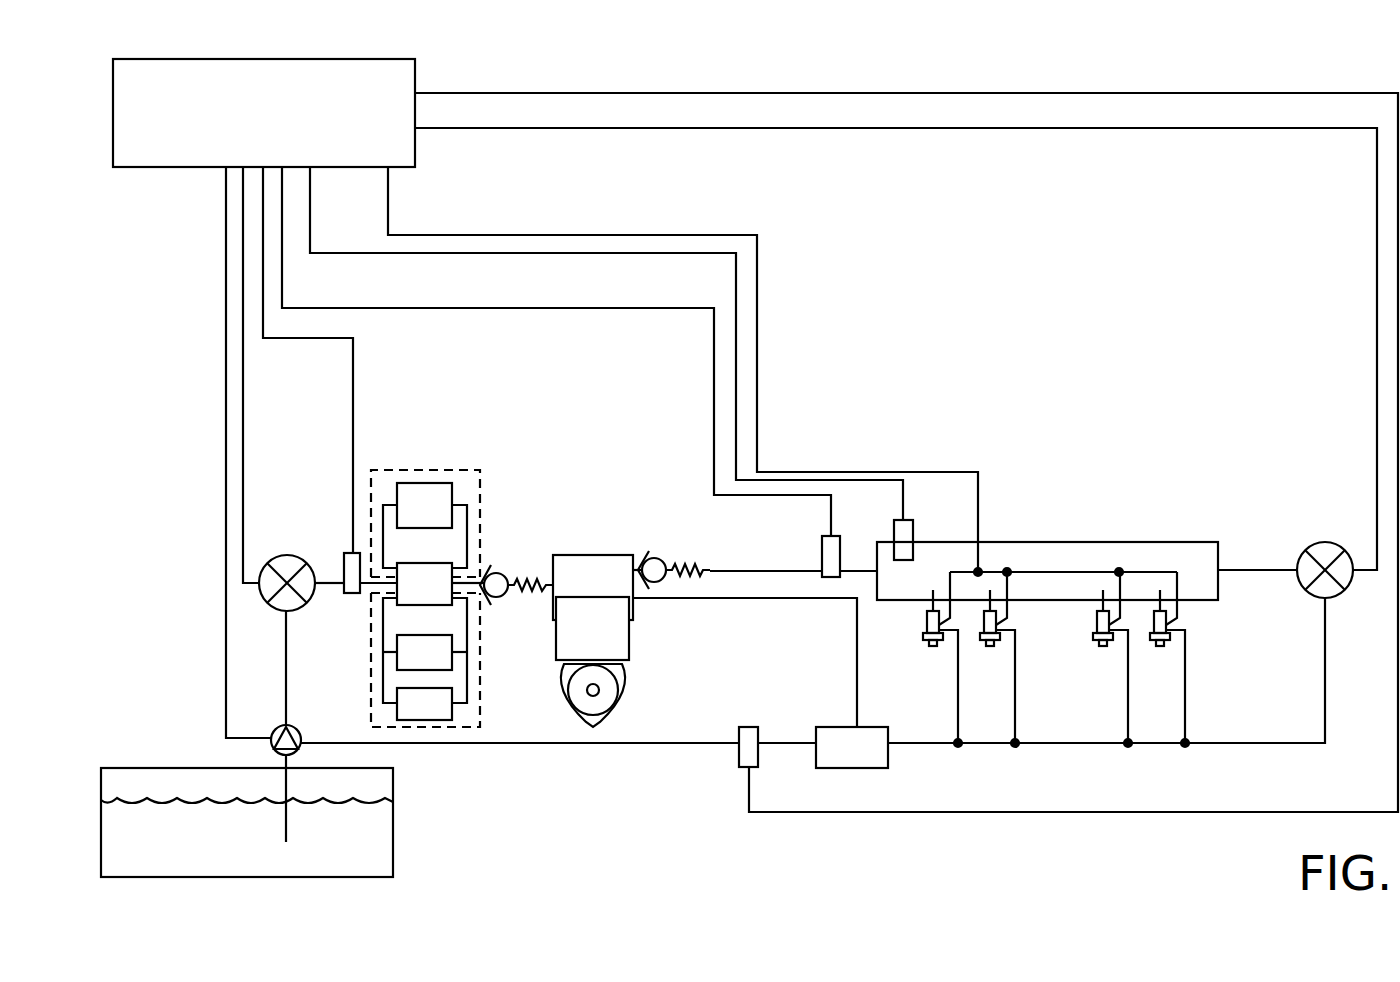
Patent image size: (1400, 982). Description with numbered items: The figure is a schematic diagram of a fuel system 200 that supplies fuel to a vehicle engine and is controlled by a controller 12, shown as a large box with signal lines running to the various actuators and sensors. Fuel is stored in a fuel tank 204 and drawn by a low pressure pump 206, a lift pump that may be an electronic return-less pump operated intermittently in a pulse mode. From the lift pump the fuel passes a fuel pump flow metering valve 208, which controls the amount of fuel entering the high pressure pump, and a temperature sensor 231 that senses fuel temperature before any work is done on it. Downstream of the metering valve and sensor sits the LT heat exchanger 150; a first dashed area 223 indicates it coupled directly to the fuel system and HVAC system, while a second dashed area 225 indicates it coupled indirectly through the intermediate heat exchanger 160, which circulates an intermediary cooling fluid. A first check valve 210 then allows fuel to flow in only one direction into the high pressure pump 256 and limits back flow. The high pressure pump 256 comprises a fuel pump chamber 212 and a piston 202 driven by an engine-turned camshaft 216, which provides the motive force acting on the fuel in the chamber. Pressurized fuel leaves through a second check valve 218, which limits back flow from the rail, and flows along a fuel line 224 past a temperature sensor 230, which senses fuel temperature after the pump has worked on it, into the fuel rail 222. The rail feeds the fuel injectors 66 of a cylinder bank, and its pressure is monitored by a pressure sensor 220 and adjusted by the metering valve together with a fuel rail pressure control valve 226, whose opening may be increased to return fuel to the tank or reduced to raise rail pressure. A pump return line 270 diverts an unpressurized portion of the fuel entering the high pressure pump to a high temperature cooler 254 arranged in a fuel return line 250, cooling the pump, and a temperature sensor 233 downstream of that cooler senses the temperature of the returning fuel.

The controller 12 is at (275, 126).
The fuel system 200 is at (1322, 57).
The fuel tank 204 is at (101, 840).
The low pressure pump 206 is at (270, 742).
The fuel pump flow metering valve 208 is at (272, 604).
The first check valve 210 is at (498, 572).
The fuel pump chamber 212 is at (608, 591).
The piston 202 is at (608, 639).
The camshaft 216 is at (560, 690).
The second check valve 218 is at (656, 557).
The pressure sensor 220 is at (916, 520).
The fuel rail 222 is at (1072, 542).
The first dashed area 223 is at (425, 504).
The fuel line 224 is at (733, 570).
The second dashed area 225 is at (399, 660).
The fuel rail pressure control valve 226 is at (1322, 542).
The temperature sensor 230 is at (824, 556).
The temperature sensor 231 is at (346, 554).
The temperature sensor 233 is at (750, 727).
The fuel return line 250 is at (932, 746).
The high temperature cooler 254 is at (868, 760).
The high pressure pump 256 is at (582, 532).
The pump return line 270 is at (778, 600).
The LT heat exchanger 150 is at (441, 597).
The intermediate heat exchanger 160 is at (441, 665).
The fuel injectors 66 is at (922, 638).